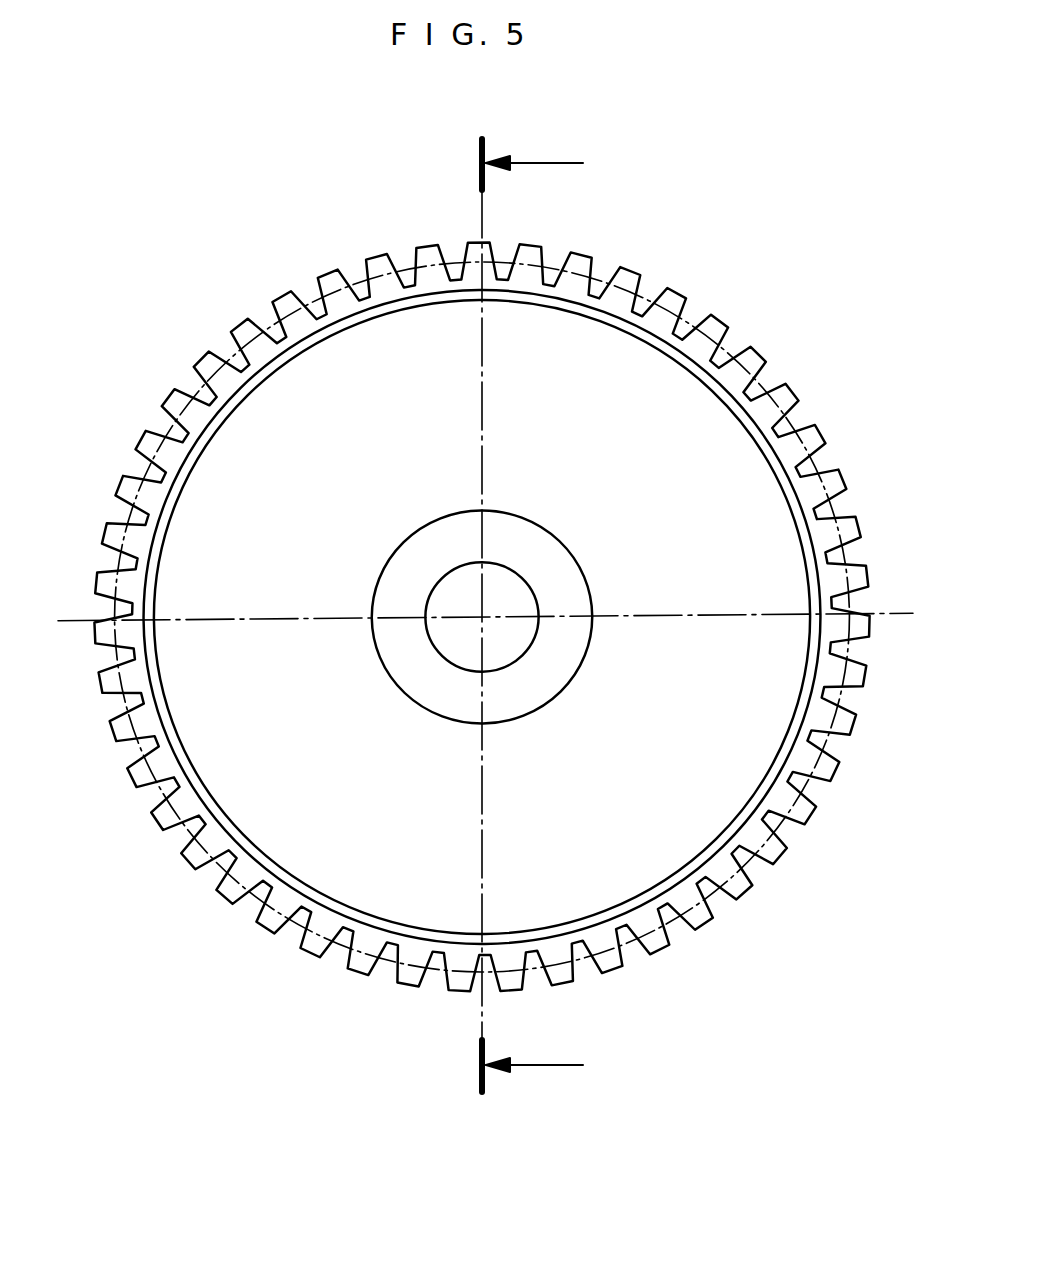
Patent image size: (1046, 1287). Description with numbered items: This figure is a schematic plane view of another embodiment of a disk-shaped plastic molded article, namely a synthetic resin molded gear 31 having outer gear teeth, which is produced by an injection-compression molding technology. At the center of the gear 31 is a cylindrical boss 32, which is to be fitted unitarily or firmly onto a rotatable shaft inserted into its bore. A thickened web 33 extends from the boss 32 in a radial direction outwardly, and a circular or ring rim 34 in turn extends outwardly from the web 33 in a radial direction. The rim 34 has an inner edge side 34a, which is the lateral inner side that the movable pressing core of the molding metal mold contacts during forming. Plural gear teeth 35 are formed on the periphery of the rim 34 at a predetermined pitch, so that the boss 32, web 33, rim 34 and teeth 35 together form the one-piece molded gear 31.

The synthetic resin molded gear 31 is at (498, 635).
The cylindrical boss 32 is at (482, 617).
The web 33 is at (668, 540).
The rim 34 is at (482, 617).
The inner edge side of the rim 34a is at (482, 617).
The gear teeth 35 is at (482, 616).